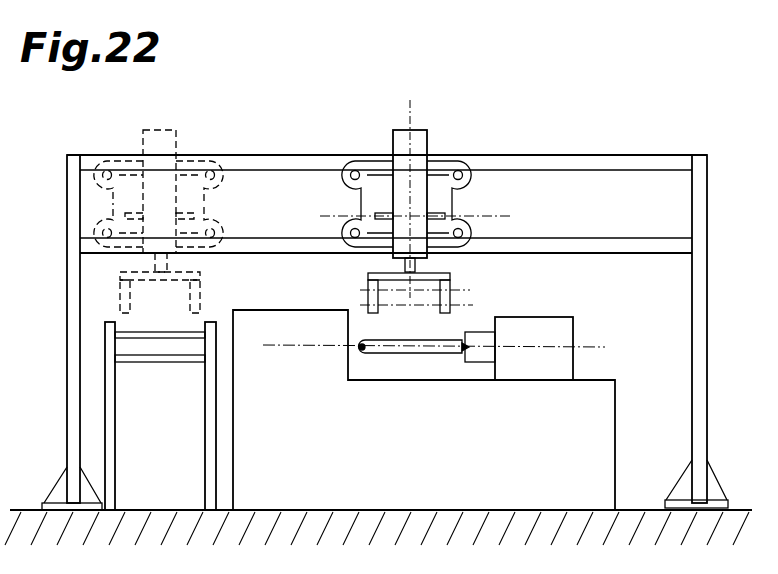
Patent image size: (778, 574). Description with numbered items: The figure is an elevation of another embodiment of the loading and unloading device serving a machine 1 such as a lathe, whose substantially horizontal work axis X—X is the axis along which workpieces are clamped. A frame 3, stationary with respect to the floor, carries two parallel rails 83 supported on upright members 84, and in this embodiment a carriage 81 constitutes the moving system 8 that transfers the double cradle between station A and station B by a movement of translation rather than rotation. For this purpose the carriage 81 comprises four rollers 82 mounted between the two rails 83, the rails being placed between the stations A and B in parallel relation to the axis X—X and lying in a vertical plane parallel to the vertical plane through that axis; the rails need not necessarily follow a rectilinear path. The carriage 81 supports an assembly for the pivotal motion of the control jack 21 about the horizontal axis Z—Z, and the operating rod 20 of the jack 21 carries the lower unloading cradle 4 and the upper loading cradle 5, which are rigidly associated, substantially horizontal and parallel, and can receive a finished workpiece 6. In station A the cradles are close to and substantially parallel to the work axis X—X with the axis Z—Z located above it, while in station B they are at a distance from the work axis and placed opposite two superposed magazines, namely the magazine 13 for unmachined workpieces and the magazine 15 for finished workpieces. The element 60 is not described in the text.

The machine 1 is at (628, 410).
The frame 3 is at (80, 155).
The lower unloading cradle 4 is at (362, 306).
The upper loading cradle 5 is at (365, 290).
The finished workpiece 6 is at (403, 353).
The moving system 8 is at (453, 192).
The magazine for unmachined workpieces 13 is at (150, 330).
The magazine for finished workpieces 15 is at (158, 364).
The operating rod 20 is at (403, 262).
The jack 21 is at (398, 143).
The upper guide rail 60 is at (558, 162).
The carriage 81 is at (375, 213).
The rollers 82 is at (463, 168).
The rails 83 is at (622, 162).
The upright members 84 is at (67, 346).
The position A is at (440, 143).
The position B is at (182, 157).
The work axis X— X is at (278, 346).
The horizontal axis Z— Z is at (332, 220).